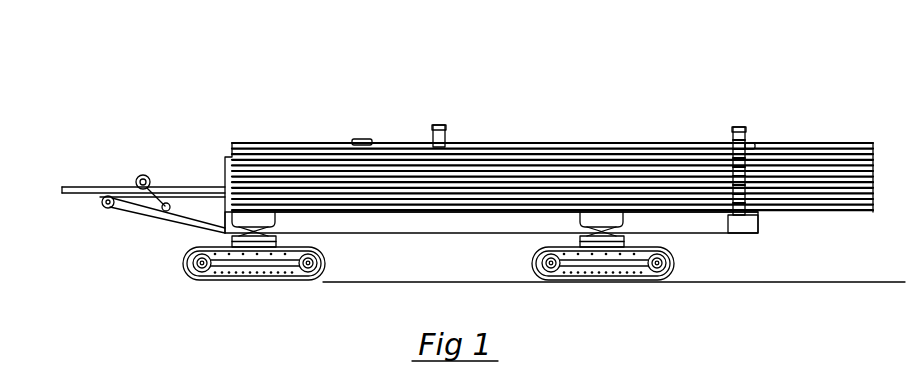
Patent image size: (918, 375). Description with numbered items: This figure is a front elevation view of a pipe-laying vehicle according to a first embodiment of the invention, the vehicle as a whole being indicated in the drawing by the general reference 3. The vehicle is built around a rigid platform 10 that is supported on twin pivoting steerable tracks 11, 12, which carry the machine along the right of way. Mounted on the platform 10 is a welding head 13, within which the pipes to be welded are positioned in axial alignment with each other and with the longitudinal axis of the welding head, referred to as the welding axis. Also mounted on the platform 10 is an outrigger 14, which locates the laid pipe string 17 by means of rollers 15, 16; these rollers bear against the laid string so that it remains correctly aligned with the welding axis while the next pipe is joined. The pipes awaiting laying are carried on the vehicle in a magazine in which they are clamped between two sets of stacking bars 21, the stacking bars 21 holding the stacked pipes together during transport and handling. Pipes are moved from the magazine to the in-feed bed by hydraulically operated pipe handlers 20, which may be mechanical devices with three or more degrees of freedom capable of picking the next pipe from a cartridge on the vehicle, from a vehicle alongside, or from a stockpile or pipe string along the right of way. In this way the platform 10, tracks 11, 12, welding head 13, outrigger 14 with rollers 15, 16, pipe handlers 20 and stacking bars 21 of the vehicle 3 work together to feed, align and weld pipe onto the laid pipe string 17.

The load of boards 3 is at (634, 64).
The rigid platform 10 is at (700, 226).
The pivoting steerable track 11 is at (222, 282).
The pivoting steerable track 12 is at (653, 282).
The welding head 13 is at (224, 172).
The outrigger 14 is at (150, 215).
The roller 15 is at (101, 208).
The roller 16 is at (143, 175).
The laid pipe string 17 is at (77, 186).
The pipe handler 20 is at (438, 124).
The stacking bar 21 is at (360, 138).